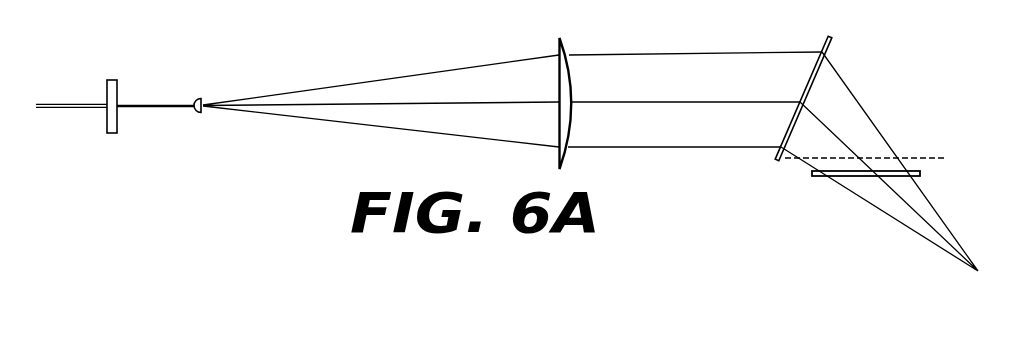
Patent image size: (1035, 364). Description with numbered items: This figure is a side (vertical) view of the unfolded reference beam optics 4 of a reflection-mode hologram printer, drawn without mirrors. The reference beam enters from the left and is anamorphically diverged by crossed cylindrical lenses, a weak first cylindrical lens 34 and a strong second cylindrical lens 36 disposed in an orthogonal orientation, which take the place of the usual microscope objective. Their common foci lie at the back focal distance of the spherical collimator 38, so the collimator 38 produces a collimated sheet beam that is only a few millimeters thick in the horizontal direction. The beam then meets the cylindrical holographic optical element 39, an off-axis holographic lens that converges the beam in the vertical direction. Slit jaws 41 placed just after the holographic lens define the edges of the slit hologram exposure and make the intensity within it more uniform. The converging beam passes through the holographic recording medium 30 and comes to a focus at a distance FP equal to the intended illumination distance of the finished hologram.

The reference beam optics 4 is at (244, 38).
The weak first cylindrical lens 34 is at (106, 84).
The strong second cylindrical lens 36 is at (200, 99).
The collimator 38 is at (558, 44).
The cylindrical holographic optical element 39 is at (833, 40).
The slits 41 is at (922, 156).
The holographic recording medium 30 is at (920, 175).
The focus distance FP is at (995, 273).